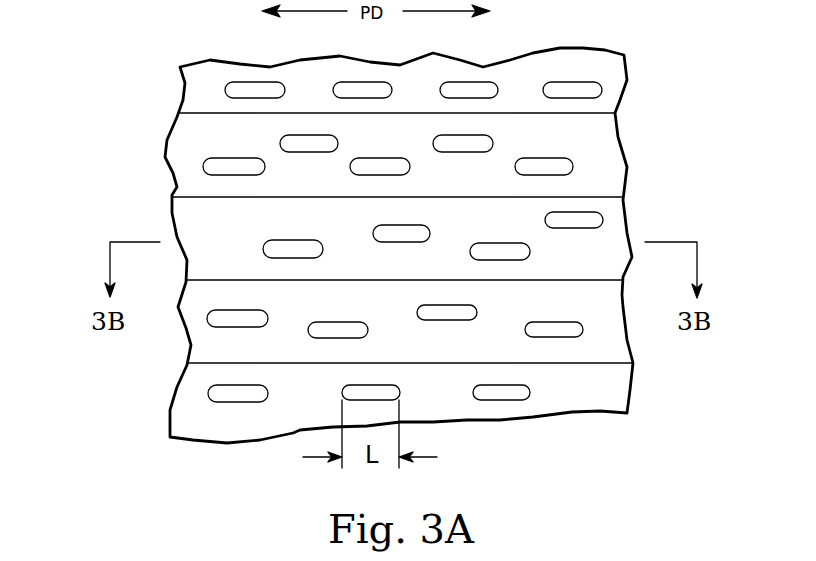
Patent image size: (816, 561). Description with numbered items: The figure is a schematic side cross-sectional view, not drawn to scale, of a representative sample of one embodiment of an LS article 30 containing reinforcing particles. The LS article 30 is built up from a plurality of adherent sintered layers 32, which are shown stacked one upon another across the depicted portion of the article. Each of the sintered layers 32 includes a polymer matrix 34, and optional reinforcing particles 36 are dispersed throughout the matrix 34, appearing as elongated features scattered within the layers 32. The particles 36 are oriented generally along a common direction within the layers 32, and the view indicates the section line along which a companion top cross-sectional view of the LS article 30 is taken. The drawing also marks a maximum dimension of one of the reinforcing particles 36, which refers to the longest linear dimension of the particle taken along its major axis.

The LS article 30 is at (102, 48).
The adherent sintered layers 32 is at (612, 97).
The polymer matrix 34 is at (197, 230).
The reinforcing particles 36 is at (552, 333).